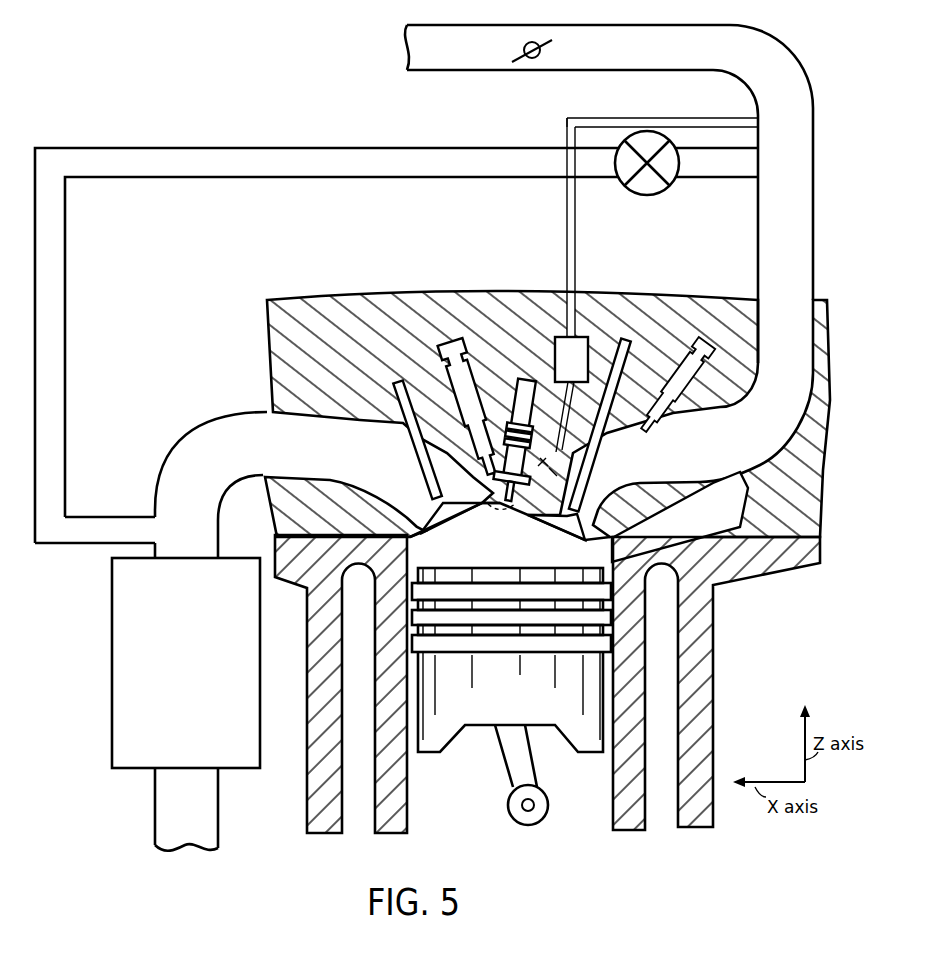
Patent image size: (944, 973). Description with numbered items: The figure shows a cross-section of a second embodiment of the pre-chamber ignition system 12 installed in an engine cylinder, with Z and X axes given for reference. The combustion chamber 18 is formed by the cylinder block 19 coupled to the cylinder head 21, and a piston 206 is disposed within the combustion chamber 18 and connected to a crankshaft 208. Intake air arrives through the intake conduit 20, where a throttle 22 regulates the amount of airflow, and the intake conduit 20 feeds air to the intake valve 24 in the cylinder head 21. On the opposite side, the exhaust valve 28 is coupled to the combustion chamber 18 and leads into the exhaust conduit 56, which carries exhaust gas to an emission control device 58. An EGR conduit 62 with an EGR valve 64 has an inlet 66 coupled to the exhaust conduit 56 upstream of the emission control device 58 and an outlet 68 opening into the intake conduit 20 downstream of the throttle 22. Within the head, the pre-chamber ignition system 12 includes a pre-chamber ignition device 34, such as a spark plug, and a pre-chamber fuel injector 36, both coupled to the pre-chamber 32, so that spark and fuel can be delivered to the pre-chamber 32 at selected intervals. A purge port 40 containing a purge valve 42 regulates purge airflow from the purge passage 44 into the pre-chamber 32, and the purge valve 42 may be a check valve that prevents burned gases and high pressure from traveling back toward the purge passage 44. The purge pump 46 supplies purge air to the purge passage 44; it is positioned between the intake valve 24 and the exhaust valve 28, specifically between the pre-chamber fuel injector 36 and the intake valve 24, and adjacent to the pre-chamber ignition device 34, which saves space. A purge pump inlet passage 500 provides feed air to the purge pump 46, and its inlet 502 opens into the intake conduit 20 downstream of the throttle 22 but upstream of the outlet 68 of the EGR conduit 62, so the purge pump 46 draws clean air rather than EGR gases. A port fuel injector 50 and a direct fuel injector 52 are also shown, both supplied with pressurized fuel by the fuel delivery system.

The pre-chamber ignition system 12 is at (603, 346).
The combustion chamber 18 is at (476, 554).
The cylinder block 19 is at (317, 571).
The intake conduit 20 is at (734, 458).
The cylinder head 21 is at (332, 518).
The throttle 22 is at (503, 40).
The intake valve 24 is at (606, 487).
The exhaust valve 28 is at (411, 477).
The pre-chamber 32 is at (502, 500).
The pre-chamber ignition device 34 is at (513, 393).
The pre-chamber fuel injector 36 is at (472, 396).
The purge port 40 is at (552, 470).
The purge valve 42 is at (545, 462).
The purge passage 44 is at (555, 422).
The purge pump 46 is at (555, 350).
The port fuel injector 50 is at (700, 372).
The direct fuel injector 52 is at (702, 526).
The exhaust conduit 56 is at (322, 463).
The emission control device 58 is at (191, 681).
The EGR conduit 62 is at (65, 402).
The EGR valve 64 is at (648, 195).
The inlet 66 is at (168, 531).
The outlet 68 is at (800, 159).
The piston 206 is at (523, 714).
The crankshaft 208 is at (548, 805).
The purge pump inlet passage 500 is at (575, 217).
The inlet 502 is at (800, 117).